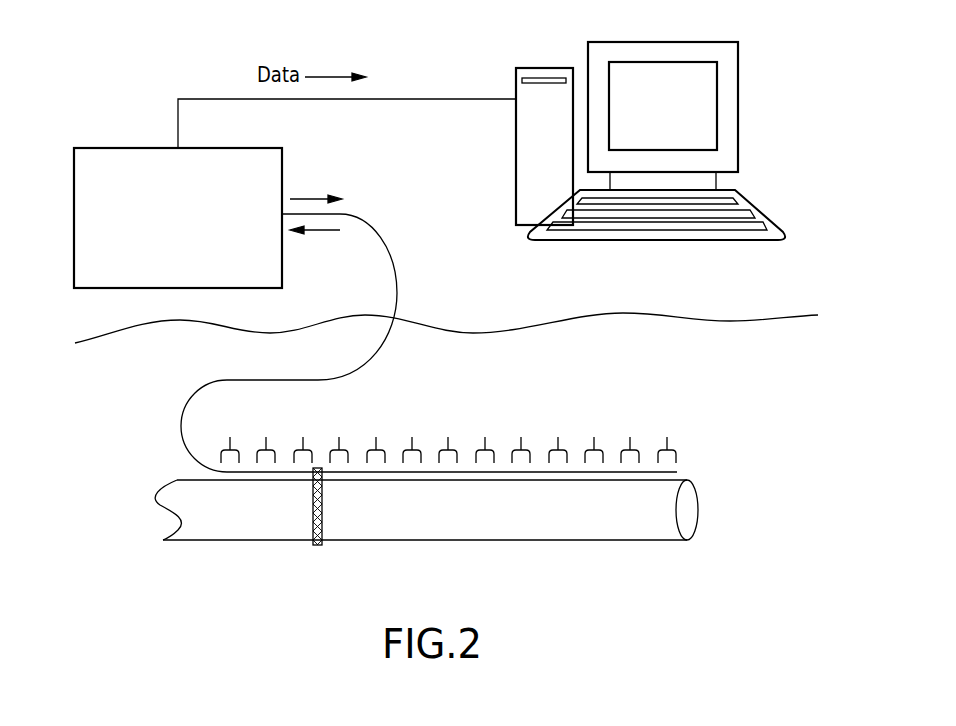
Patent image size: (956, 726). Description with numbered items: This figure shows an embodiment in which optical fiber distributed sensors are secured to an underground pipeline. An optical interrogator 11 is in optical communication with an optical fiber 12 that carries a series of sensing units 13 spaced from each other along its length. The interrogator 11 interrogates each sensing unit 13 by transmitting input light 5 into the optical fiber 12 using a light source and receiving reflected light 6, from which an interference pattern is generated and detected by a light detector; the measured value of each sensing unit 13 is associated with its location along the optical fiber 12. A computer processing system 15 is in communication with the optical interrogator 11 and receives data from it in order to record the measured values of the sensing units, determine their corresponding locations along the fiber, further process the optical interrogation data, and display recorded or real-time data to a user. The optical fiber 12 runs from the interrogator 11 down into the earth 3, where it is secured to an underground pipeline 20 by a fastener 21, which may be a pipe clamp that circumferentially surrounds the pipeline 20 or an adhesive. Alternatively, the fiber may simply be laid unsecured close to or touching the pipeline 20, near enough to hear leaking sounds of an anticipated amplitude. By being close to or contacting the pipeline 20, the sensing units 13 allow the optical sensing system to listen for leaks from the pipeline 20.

The optical interrogator 11 is at (128, 148).
The input light 5 is at (303, 197).
The reflected light 6 is at (328, 231).
The computer processing system 15 is at (531, 68).
The optical fiber 12 is at (398, 295).
The sensing units 13 is at (521, 437).
The earth 3 is at (160, 410).
The fastener 21 is at (317, 545).
The pipeline 20 is at (538, 540).